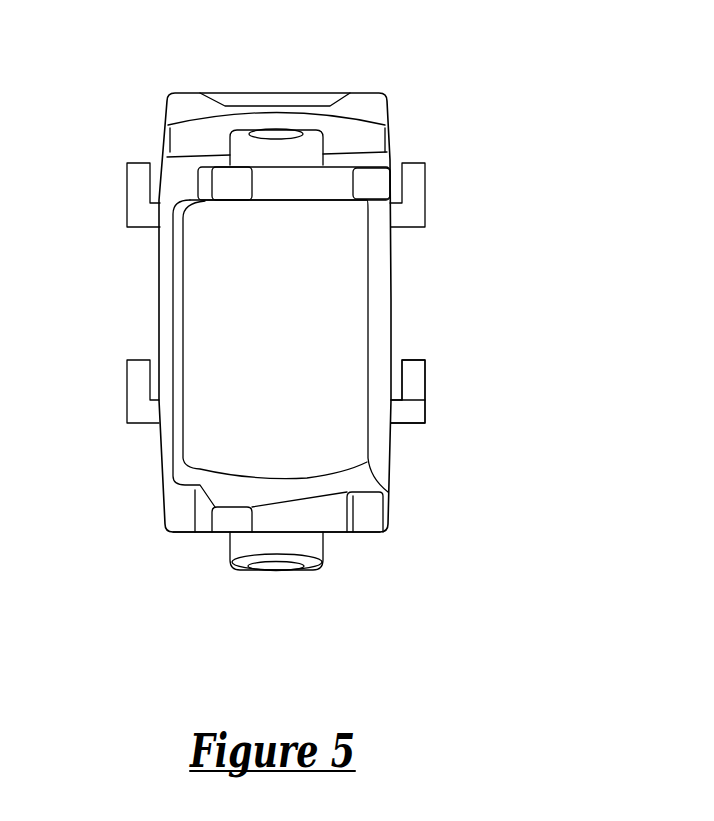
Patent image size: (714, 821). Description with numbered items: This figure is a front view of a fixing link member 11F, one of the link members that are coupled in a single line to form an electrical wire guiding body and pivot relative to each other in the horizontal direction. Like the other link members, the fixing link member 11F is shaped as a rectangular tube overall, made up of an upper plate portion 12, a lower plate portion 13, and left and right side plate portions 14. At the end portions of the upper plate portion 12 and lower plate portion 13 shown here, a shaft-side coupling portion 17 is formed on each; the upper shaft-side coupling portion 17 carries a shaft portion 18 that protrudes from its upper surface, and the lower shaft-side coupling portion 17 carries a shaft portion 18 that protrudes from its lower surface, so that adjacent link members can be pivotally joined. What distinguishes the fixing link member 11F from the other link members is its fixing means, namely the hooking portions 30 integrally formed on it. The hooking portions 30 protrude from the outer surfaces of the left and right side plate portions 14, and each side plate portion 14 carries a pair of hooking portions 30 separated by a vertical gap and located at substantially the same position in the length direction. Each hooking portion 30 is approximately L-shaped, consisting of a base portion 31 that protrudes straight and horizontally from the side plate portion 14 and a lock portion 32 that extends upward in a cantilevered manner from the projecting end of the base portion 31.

The fixing link member 11F is at (447, 67).
The upper plate portion 12 is at (317, 93).
The lower plate portion 13 is at (332, 533).
The side plate portion 14 is at (158, 293).
The shaft-side coupling portion 17 is at (313, 183).
The shaft portion 18 is at (245, 145).
The hooking portion 30 is at (125, 185).
The base portion 31 is at (397, 413).
The lock portion 32 is at (418, 373).